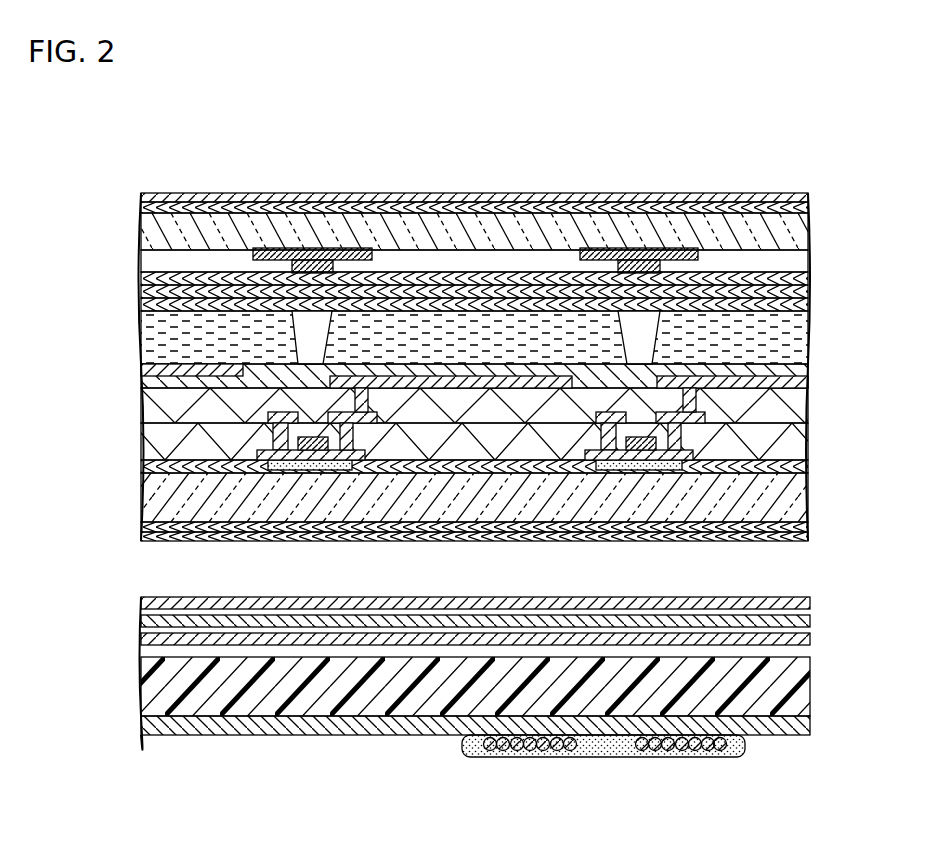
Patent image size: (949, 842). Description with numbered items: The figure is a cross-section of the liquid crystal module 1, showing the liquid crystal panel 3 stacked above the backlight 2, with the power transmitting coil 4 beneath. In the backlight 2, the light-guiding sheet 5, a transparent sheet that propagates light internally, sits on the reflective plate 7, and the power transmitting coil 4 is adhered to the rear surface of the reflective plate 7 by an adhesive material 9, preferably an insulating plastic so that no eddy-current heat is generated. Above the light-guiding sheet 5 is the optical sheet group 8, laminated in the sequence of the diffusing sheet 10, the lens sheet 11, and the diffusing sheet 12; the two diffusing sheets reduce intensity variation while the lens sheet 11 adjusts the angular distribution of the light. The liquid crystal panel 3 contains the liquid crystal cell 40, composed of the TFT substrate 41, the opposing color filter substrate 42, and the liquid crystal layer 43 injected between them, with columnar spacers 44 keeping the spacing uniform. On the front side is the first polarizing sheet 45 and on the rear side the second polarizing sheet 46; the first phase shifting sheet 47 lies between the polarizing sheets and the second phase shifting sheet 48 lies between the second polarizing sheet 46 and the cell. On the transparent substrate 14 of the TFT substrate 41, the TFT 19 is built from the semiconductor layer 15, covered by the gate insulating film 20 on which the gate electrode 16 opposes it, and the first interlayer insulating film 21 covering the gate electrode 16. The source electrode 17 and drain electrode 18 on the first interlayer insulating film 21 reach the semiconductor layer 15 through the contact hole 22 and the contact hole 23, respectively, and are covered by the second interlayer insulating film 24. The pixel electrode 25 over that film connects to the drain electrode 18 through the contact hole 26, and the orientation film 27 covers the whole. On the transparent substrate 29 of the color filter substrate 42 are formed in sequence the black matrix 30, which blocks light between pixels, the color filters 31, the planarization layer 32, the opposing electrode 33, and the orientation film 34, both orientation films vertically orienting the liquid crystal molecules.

The liquid crystal module 1 is at (567, 132).
The backlight 2 is at (122, 593).
The liquid crystal panel 3 is at (475, 190).
The power transmitting coil 4 is at (531, 748).
The light-guiding sheet 5 is at (800, 690).
The reflective plate 7 is at (790, 725).
The optical sheet group 8 is at (877, 580).
The adhesive material 9 is at (598, 753).
The diffusing sheet 10 is at (812, 640).
The lens sheet 11 is at (812, 621).
The diffusing sheet 12 is at (812, 601).
The transparent substrate 14 is at (795, 497).
The semiconductor layer 15 is at (290, 471).
The gate electrode 16 is at (312, 451).
The source electrode 17 is at (265, 420).
The drain electrode 18 is at (362, 404).
The TFT 19 is at (307, 493).
The gate insulating film 20 is at (808, 467).
The first interlayer insulating film 21 is at (795, 440).
The contact hole 22 is at (262, 458).
The contact hole 23 is at (350, 452).
The second interlayer insulating film 24 is at (795, 405).
The pixel electrode 25 is at (540, 388).
The contact hole 26 is at (372, 392).
The orientation film 27 is at (798, 370).
The transparent substrate 29 is at (795, 230).
The black matrix 30 is at (310, 248).
The color filters 31 is at (412, 264).
The planarization layer 32 is at (808, 280).
The opposing electrode 33 is at (808, 292).
The orientation film 34 is at (808, 305).
The liquid crystal cell 40 is at (74, 247).
The TFT substrate 41 is at (123, 363).
The color filter substrate 42 is at (123, 212).
The liquid crystal layer 43 is at (138, 332).
The spacers 44 is at (634, 330).
The first polarizing sheet 45 is at (808, 195).
The second polarizing sheet 46 is at (808, 538).
The first phase shifting sheet 47 is at (808, 205).
The second phase shifting sheet 48 is at (808, 527).